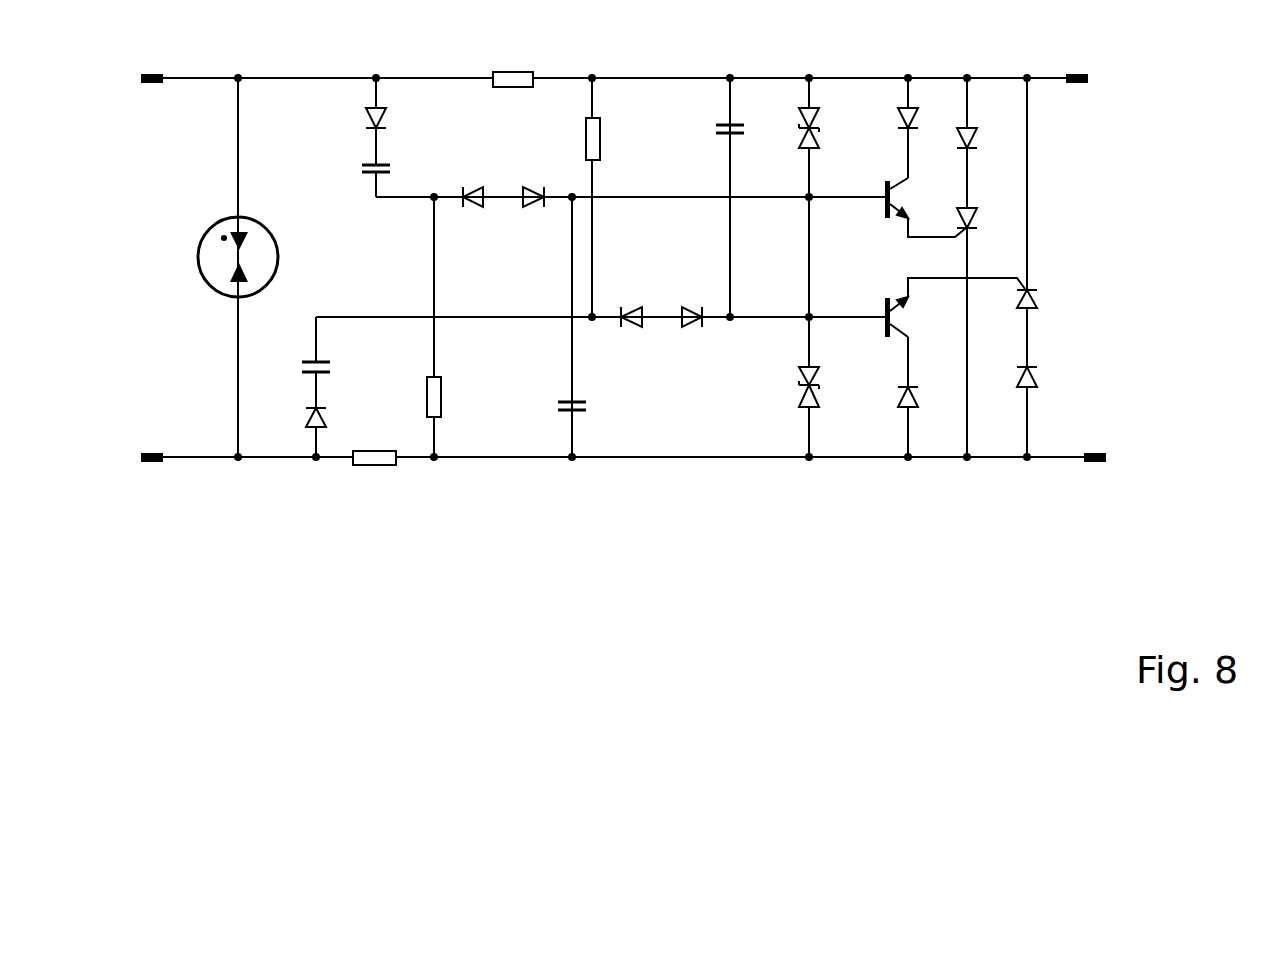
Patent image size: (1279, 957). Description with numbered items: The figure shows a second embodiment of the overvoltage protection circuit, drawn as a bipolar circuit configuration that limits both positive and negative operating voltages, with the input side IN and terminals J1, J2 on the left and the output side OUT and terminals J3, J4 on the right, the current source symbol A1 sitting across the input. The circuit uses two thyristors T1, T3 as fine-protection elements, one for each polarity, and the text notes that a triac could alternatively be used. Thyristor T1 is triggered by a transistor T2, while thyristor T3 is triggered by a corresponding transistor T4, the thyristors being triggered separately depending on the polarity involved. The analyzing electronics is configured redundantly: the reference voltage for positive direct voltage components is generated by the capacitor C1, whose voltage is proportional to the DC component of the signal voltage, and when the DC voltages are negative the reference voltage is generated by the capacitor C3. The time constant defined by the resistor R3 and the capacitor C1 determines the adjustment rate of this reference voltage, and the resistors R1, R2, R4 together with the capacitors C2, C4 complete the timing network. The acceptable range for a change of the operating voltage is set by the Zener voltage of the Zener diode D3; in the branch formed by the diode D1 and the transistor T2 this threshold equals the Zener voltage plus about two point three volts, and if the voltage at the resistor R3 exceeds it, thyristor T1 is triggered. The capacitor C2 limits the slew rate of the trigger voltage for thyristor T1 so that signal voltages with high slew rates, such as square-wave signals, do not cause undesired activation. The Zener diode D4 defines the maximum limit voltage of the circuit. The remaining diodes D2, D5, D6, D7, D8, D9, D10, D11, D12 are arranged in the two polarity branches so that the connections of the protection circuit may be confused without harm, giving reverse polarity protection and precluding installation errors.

The input terminal J1 is at (151, 64).
The input terminal J2 is at (150, 444).
The output terminal J3 is at (1076, 67).
The output terminal J4 is at (1094, 446).
The input side IN is at (129, 191).
The output side OUT is at (1103, 212).
The current source A1 is at (227, 252).
The resistor R1 is at (509, 68).
The resistor R2 is at (371, 447).
The resistor R3 is at (419, 390).
The resistor R4 is at (577, 133).
The capacitor C1 is at (358, 166).
The capacitor C2 is at (559, 394).
The capacitor C3 is at (299, 364).
The capacitor C4 is at (714, 121).
The diode D1 is at (530, 184).
The diode D2 is at (358, 116).
The Zener diode D3 is at (465, 184).
The Zener diode D4 is at (792, 128).
The diode D5 is at (688, 304).
The diode D6 is at (299, 414).
The diode D7 is at (624, 304).
The bidirectional zener diode D8 is at (792, 387).
The diode D9 is at (890, 119).
The diode D10 is at (952, 129).
The diode D11 is at (887, 397).
The diode D12 is at (1010, 367).
The thyristor T1 is at (955, 209).
The transistor T2 is at (883, 187).
The thyristor T3 is at (972, 293).
The transistor T4 is at (883, 312).